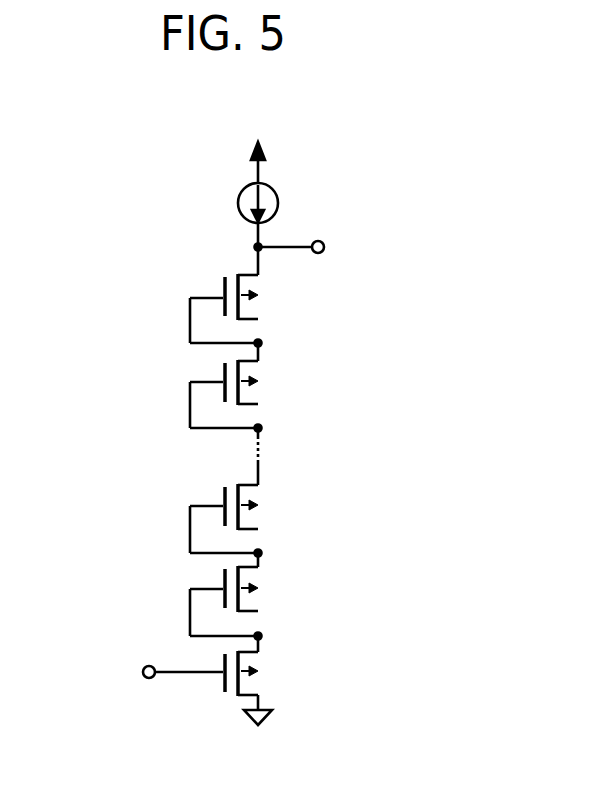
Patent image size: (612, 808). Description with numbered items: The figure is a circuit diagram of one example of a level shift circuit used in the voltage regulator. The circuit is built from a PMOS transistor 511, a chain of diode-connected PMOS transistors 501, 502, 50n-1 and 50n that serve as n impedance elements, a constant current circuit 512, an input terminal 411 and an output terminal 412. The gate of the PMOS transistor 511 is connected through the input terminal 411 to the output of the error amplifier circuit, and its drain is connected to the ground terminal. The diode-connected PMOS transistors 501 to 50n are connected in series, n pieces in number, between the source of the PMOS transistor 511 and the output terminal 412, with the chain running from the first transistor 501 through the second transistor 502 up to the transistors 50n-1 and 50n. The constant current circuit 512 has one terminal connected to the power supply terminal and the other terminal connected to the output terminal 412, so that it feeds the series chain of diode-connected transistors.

The constant current circuit 512 is at (238, 198).
The output terminal 412 is at (318, 239).
The PMOS transistor 50n is at (258, 305).
The PMOS transistor 50n-1 is at (262, 392).
The PMOS transistor 502 is at (262, 518).
The PMOS transistor 501 is at (262, 600).
The PMOS transistor 511 is at (258, 680).
The input terminal 411 is at (147, 664).